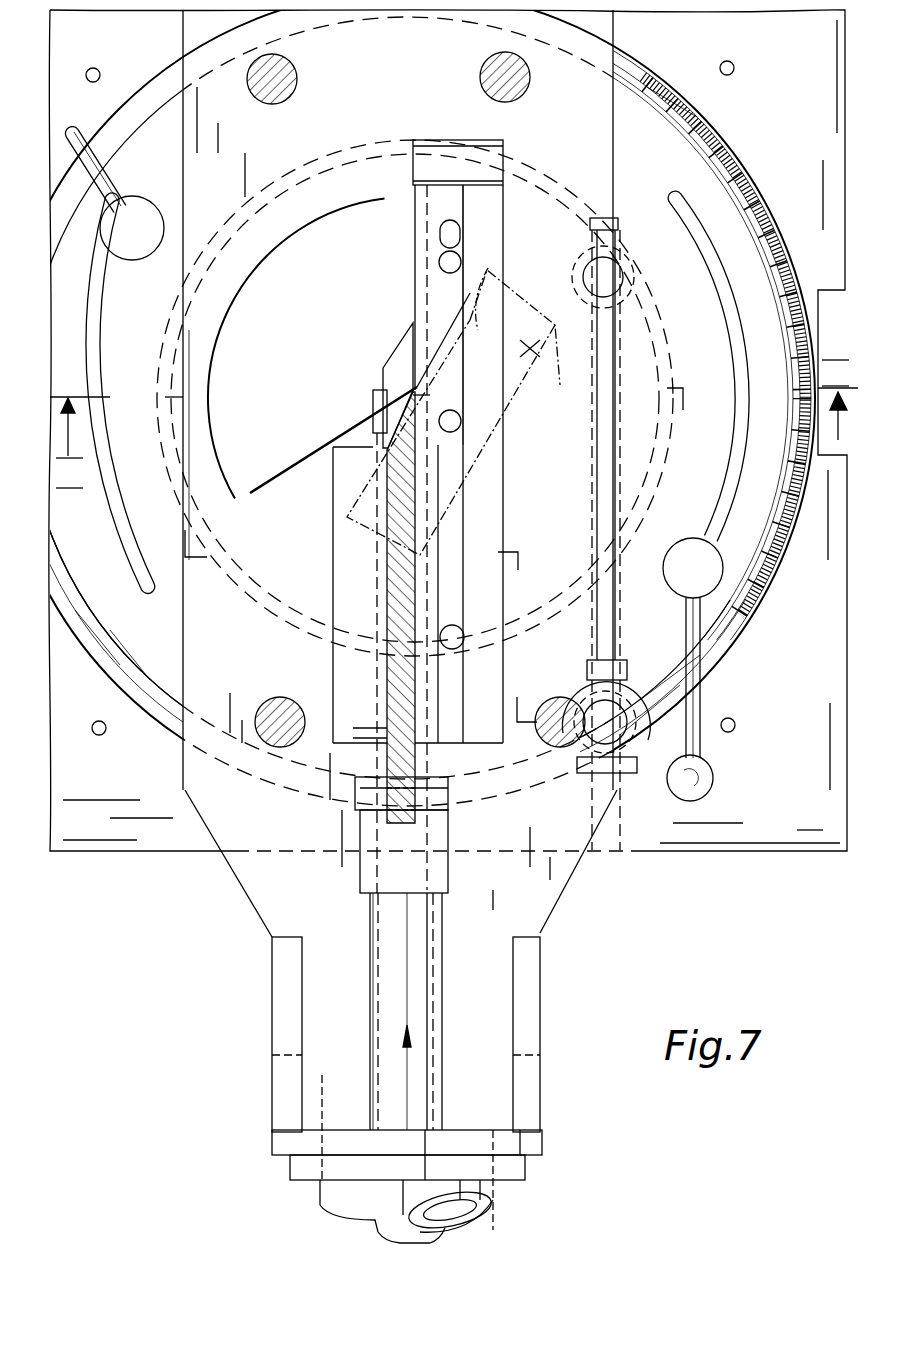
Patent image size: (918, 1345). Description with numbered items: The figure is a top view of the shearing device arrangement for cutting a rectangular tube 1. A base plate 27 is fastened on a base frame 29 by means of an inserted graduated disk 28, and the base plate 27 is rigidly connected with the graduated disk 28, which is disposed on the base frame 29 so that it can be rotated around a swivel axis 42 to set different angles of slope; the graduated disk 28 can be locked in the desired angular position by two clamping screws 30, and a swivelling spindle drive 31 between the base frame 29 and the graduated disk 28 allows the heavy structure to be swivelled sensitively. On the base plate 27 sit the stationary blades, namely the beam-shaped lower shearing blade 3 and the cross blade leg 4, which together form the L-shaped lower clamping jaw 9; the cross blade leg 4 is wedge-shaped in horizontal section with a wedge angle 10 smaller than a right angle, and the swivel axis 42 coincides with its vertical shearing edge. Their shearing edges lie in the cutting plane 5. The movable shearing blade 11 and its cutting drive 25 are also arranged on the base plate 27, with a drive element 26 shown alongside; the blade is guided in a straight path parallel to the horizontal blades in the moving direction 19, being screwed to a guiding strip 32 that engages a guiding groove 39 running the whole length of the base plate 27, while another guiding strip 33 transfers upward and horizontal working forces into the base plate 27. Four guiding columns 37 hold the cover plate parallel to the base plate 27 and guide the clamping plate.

The rectangular tube 1 is at (454, 412).
The lower shearing blade 3 is at (497, 517).
The cross blade leg 4 is at (466, 246).
The cutting plane 5 is at (412, 212).
The lower clamping jaw 9 is at (408, 285).
The wedge angle 10 is at (440, 320).
The movable shearing blade 11 is at (397, 362).
The moving direction 19 is at (405, 1062).
The cutting drive 25 is at (497, 1202).
The rod 26 is at (445, 1015).
The base plate 27 is at (582, 158).
The graduated disk 28 is at (775, 560).
The base frame 29 is at (782, 807).
The clamping screws 30 is at (140, 215).
The swivelling spindle drive 31 is at (630, 825).
The guiding strip 32 is at (373, 402).
The guiding strip 33 is at (347, 473).
The guiding columns 37 is at (286, 66).
The guiding groove 39 is at (348, 127).
The swivel axis 42 is at (418, 395).